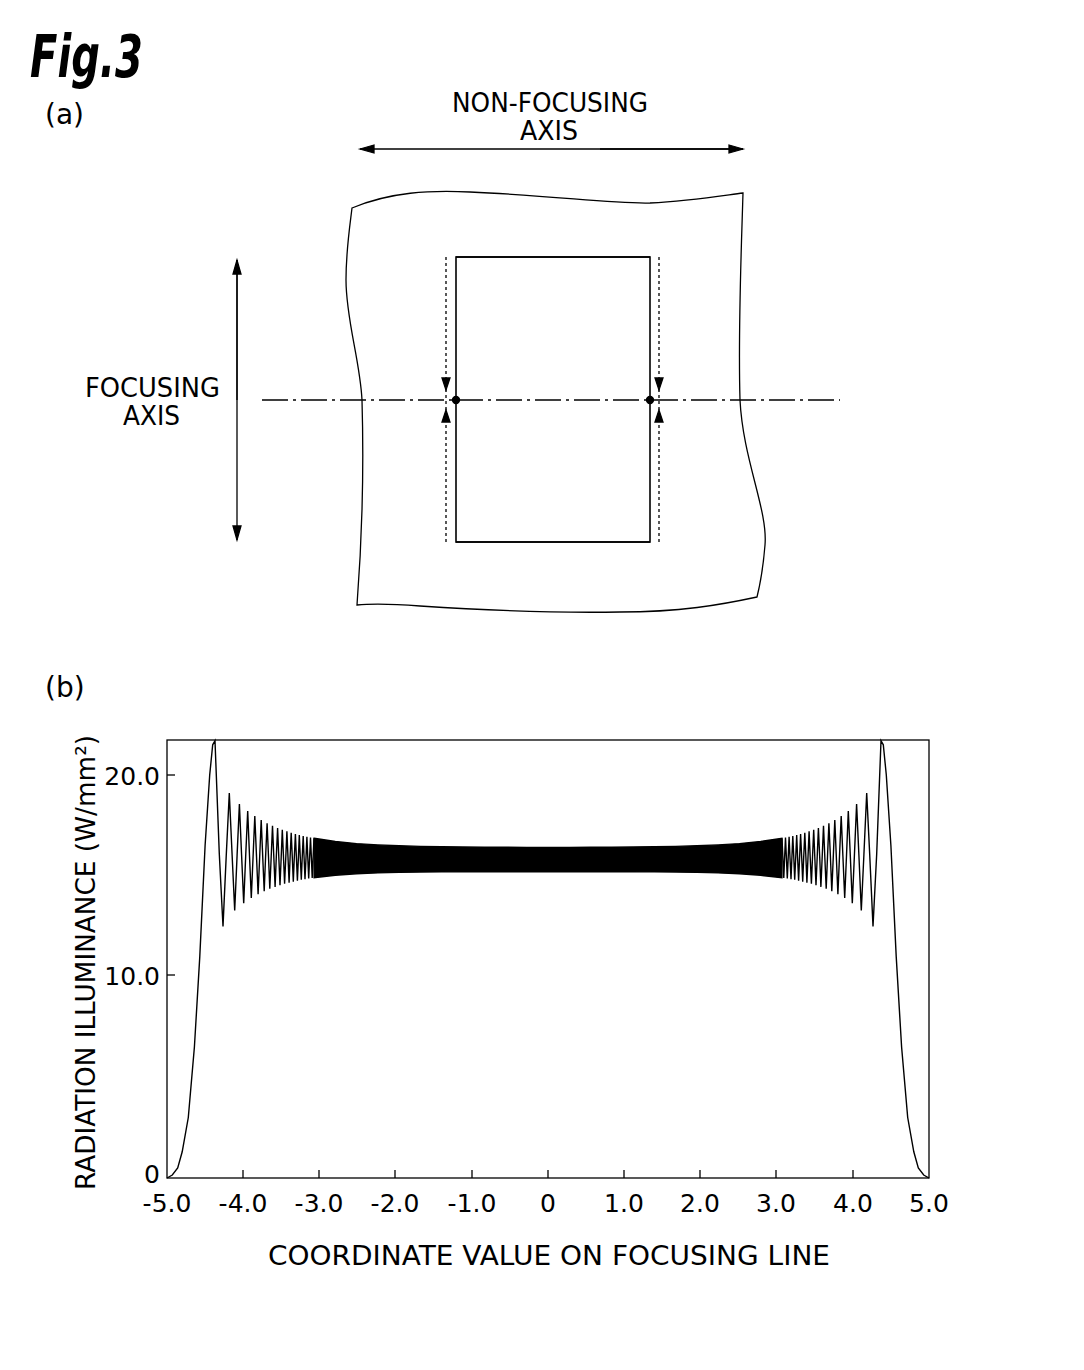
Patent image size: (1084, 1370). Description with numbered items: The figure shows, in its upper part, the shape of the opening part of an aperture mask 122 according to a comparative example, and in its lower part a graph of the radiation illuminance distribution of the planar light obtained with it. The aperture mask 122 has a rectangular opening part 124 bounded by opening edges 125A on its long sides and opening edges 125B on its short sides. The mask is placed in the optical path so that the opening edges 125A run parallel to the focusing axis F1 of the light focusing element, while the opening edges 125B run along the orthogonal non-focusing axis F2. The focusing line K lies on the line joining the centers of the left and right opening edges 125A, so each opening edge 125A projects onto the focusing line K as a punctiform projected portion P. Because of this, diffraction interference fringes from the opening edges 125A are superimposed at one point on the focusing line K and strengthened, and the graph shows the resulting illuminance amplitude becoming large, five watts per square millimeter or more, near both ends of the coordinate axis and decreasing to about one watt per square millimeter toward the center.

The aperture mask 122 is at (333, 203).
The opening part 124 is at (660, 242).
The opening edges corresponding to a long side 125A is at (456, 470).
The opening edges corresponding to a short side 125B is at (548, 268).
The projected portion P is at (457, 399).
The focusing line K is at (827, 395).
The focusing axis F1 is at (236, 313).
The non-focusing axis F2 is at (678, 148).